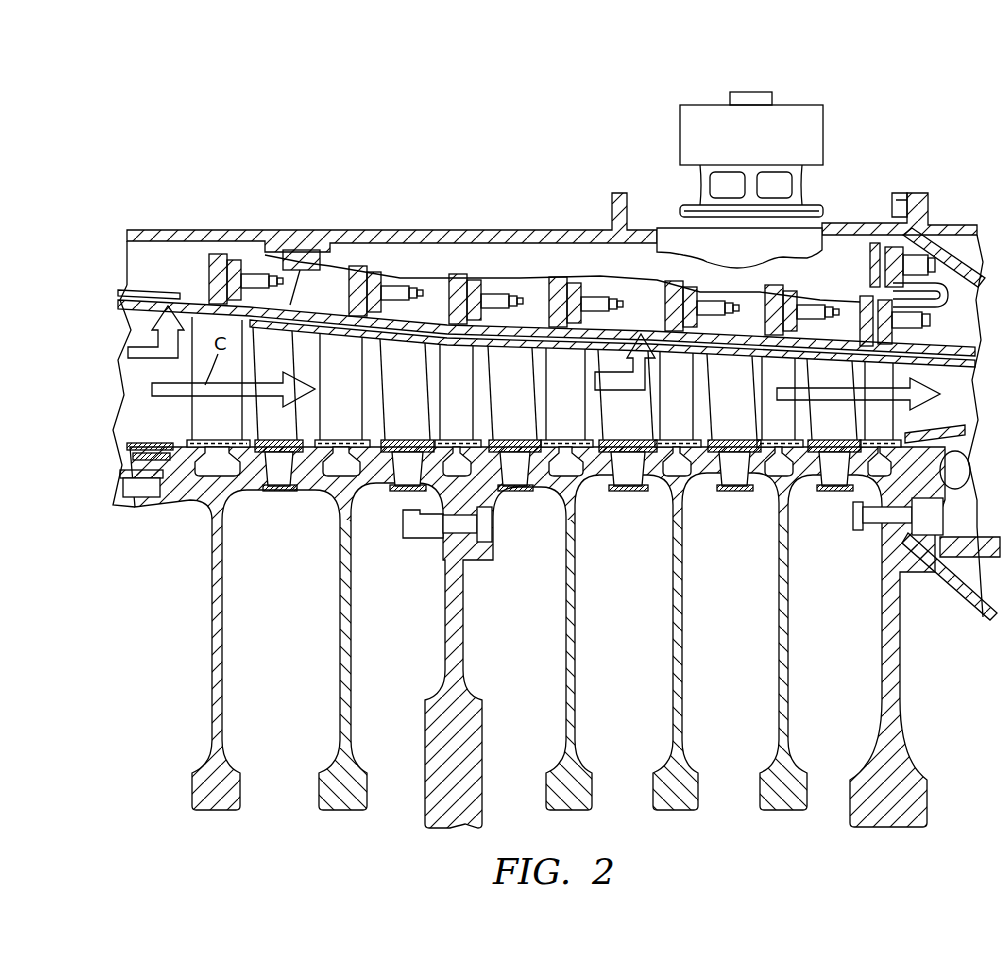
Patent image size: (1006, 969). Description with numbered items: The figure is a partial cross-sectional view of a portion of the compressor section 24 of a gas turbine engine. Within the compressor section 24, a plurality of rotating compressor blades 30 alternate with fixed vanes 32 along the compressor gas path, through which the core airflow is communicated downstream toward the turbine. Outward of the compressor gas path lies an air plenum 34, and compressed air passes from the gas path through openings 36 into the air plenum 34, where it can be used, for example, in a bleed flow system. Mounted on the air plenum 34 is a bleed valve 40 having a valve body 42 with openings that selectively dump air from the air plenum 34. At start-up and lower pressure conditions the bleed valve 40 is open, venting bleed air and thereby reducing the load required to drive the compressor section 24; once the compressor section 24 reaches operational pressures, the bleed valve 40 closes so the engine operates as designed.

The compressor section 24 is at (527, 185).
The compressor blades 30 is at (201, 441).
The fixed vanes 32 is at (278, 440).
The air plenum 34 is at (398, 250).
The openings 36 is at (170, 300).
The bleed valve 40 is at (830, 113).
The valve body 42 is at (780, 186).